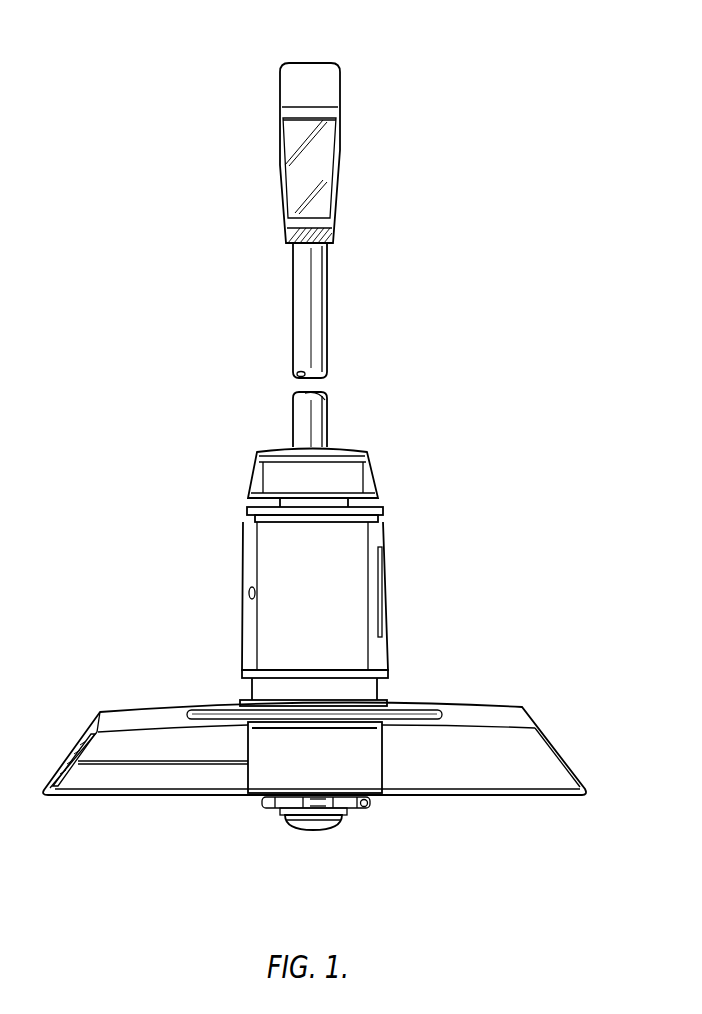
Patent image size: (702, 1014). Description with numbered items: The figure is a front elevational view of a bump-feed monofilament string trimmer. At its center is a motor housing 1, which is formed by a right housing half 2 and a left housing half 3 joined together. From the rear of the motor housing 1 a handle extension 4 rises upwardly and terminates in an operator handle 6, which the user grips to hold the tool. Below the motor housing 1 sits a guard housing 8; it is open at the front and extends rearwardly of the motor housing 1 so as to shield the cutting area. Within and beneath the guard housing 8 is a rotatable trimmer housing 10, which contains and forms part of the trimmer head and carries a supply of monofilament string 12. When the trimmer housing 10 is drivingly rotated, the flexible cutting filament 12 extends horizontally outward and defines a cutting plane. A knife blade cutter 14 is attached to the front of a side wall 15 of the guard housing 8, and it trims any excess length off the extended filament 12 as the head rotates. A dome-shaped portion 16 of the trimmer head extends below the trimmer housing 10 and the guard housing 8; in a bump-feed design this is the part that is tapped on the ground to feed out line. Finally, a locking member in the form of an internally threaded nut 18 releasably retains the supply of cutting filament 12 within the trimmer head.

The motor housing 1 is at (316, 467).
The right housing half 2 is at (347, 620).
The left housing half 3 is at (273, 603).
The handle extension 4 is at (310, 300).
The operator handle 6 is at (307, 173).
The guard housing 8 is at (562, 751).
The trimmer housing 10 is at (378, 772).
The monofilament string 12 is at (190, 764).
The knife blade cutter 14 is at (93, 739).
The side wall 15 is at (87, 730).
The dome-shaped portion 16 is at (305, 826).
The internally threaded nut 18 is at (368, 804).